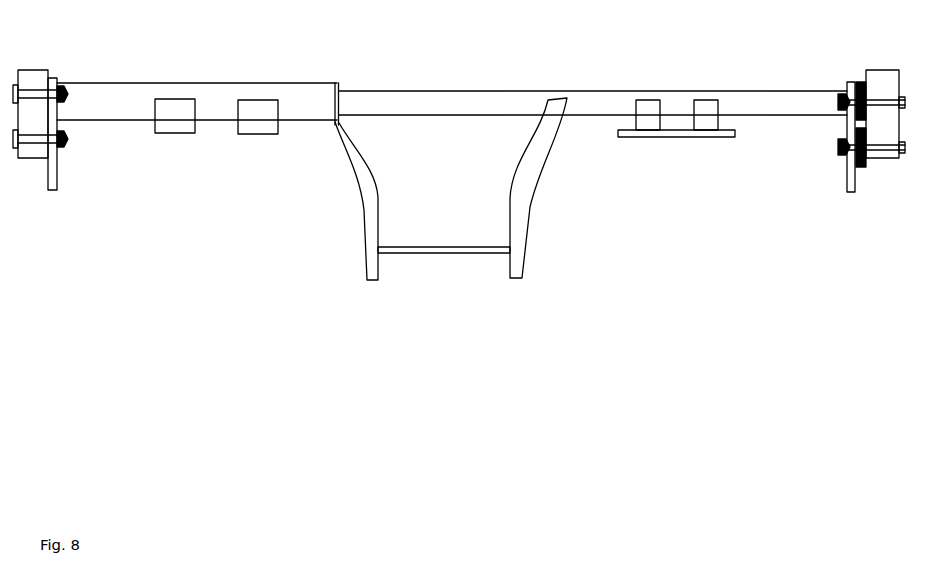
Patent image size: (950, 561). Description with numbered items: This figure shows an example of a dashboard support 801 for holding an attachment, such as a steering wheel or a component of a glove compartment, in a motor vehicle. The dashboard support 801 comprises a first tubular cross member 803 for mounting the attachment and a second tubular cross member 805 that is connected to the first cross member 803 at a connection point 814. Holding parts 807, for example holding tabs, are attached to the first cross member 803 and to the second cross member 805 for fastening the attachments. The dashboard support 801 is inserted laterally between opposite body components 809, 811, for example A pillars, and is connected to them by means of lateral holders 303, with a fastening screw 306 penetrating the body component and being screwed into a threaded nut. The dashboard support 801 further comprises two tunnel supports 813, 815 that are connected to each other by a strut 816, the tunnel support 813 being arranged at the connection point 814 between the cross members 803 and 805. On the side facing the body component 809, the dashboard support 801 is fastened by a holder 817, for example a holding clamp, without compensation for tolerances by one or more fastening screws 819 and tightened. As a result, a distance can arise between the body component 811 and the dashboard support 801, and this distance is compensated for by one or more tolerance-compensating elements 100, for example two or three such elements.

The dashboard support 801 is at (372, 68).
The first tubular cross member 803 is at (213, 90).
The second tubular cross member 805 is at (453, 103).
The holding parts 807 is at (167, 127).
The body component 809 is at (43, 75).
The body component 811 is at (883, 82).
The tunnel support 813 is at (363, 208).
The connection point 814 is at (340, 110).
The tunnel support 815 is at (530, 203).
The strut 816 is at (428, 253).
The holder 817 is at (56, 175).
The fastening screws 819 is at (40, 92).
The tolerance-compensating element 100 is at (852, 73).
The lateral holder 303 is at (850, 178).
The fastening screw 306 is at (892, 95).